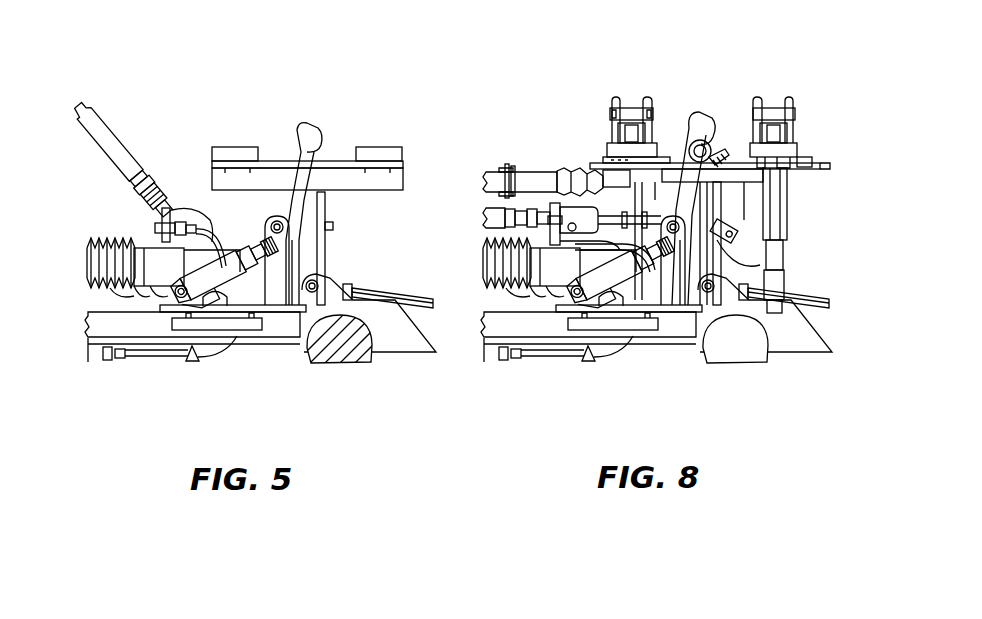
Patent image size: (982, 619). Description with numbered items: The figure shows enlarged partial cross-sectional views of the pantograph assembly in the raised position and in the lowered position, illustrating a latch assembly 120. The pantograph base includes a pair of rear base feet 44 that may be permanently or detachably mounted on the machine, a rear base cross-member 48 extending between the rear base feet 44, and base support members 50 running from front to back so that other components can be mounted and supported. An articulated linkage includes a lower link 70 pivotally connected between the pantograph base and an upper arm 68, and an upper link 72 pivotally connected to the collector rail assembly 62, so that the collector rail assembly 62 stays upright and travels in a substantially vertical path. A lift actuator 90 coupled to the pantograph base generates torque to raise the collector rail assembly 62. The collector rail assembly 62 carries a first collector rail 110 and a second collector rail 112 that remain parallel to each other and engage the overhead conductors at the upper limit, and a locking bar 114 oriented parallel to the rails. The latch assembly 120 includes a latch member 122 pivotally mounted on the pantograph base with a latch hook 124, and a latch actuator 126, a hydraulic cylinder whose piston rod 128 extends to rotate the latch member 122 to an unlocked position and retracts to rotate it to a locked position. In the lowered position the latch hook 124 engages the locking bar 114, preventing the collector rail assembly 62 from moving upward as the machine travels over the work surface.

In FIG. 5, the rear base feet 44 is at (421, 343).
In FIG. 8, the rear base feet 44 is at (795, 343).
In FIG. 5, the rear base cross-member 48 is at (341, 364).
In FIG. 8, the rear base cross-member 48 is at (740, 364).
In FIG. 5, the base support members 50 is at (140, 330).
In FIG. 8, the base support members 50 is at (512, 335).
In FIG. 8, the collector rail assembly 62 is at (808, 155).
In FIG. 8, the upper arm 68 is at (498, 176).
In FIG. 5, the lower link 70 is at (102, 127).
In FIG. 8, the lower link 70 is at (483, 213).
In FIG. 8, the upper link 72 is at (768, 266).
In FIG. 5, the lift actuator 90 is at (106, 226).
In FIG. 8, the lift actuator 90 is at (480, 251).
In FIG. 8, the first collector rail 110 is at (612, 112).
In FIG. 8, the second collector rail 112 is at (797, 110).
In FIG. 8, the locking bar 114 is at (716, 150).
In FIG. 5, the latch assembly 120 is at (325, 120).
In FIG. 8, the latch assembly 120 is at (708, 72).
In FIG. 5, the latch member 122 is at (294, 150).
In FIG. 8, the latch member 122 is at (687, 134).
In FIG. 5, the latch hook 124 is at (304, 152).
In FIG. 8, the latch hook 124 is at (701, 140).
In FIG. 5, the latch actuator 126 is at (212, 280).
In FIG. 8, the latch actuator 126 is at (606, 290).
In FIG. 5, the piston rod 128 is at (255, 258).
In FIG. 8, the piston rod 128 is at (660, 295).